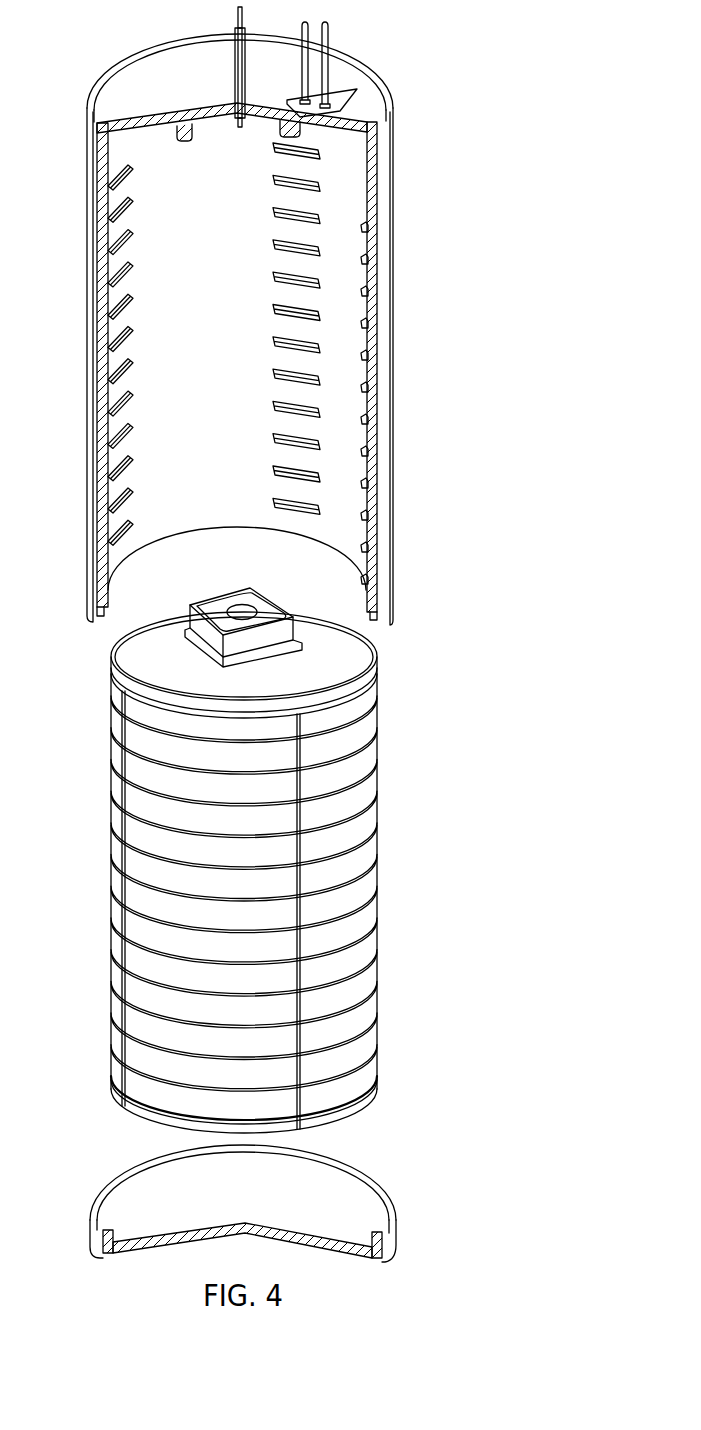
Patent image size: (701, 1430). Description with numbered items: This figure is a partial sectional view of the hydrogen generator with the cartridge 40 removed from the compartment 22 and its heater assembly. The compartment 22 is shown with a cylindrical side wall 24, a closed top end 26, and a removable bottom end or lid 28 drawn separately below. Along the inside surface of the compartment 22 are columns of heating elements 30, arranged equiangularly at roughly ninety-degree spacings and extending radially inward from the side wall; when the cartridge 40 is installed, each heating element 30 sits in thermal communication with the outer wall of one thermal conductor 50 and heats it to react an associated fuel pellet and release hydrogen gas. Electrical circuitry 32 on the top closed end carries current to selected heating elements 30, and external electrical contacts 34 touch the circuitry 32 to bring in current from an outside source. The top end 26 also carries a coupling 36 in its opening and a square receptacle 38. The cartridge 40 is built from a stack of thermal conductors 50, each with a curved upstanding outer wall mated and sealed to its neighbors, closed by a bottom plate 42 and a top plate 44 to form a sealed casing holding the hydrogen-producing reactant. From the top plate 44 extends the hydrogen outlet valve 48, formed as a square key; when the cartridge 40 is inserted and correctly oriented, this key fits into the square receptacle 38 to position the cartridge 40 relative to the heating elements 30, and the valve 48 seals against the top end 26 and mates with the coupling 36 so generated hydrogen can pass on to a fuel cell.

The compartment 22 is at (428, 183).
The housing side wall 24 is at (390, 321).
The closed top end 26 is at (140, 82).
The removable bottom end or lid 28 is at (360, 1258).
The heating elements 30 is at (320, 272).
The electrical circuitry 32 is at (338, 95).
The external electrical contacts 34 is at (313, 24).
The coupling 36 is at (238, 32).
The square receptacle 38 is at (195, 130).
The cartridge 40 is at (430, 683).
The bottom plate 42 is at (110, 1077).
The top plate 44 is at (341, 658).
The hydrogen outlet valve 48 is at (263, 608).
The thermal conductors 50 is at (152, 757).